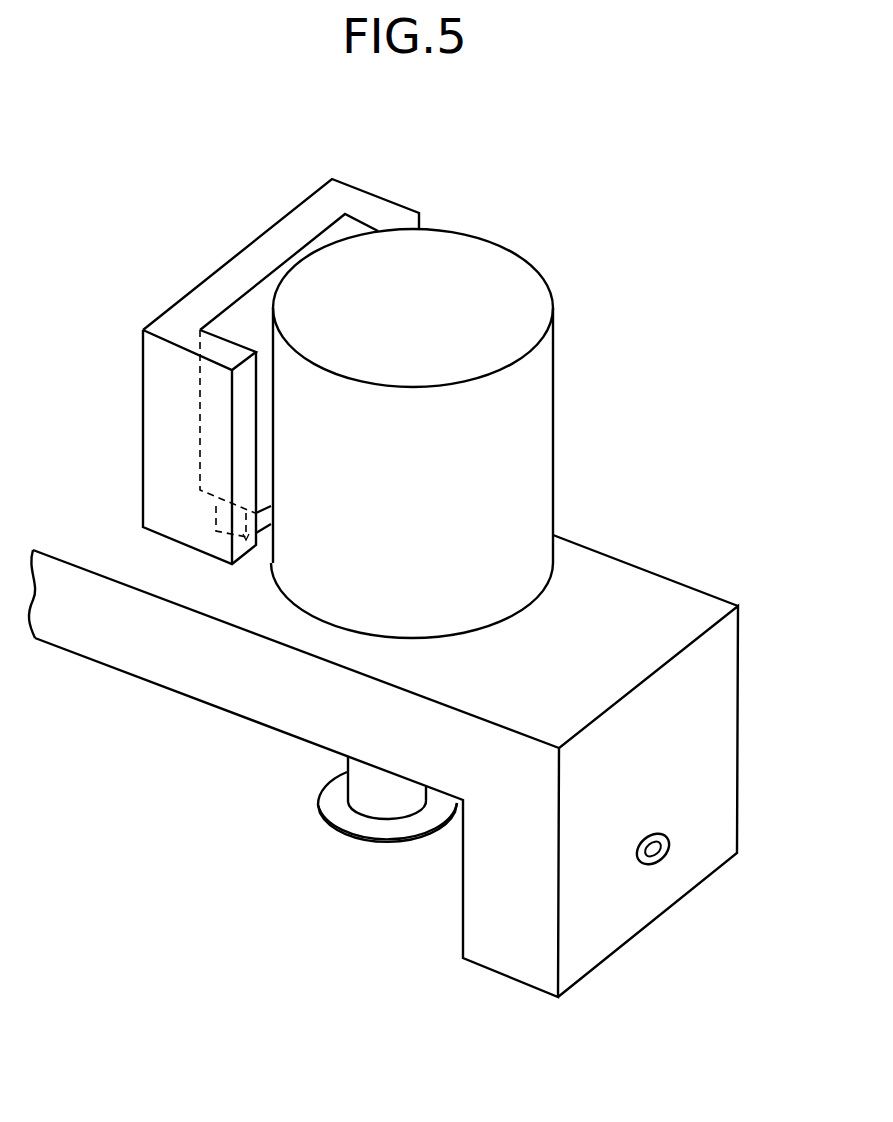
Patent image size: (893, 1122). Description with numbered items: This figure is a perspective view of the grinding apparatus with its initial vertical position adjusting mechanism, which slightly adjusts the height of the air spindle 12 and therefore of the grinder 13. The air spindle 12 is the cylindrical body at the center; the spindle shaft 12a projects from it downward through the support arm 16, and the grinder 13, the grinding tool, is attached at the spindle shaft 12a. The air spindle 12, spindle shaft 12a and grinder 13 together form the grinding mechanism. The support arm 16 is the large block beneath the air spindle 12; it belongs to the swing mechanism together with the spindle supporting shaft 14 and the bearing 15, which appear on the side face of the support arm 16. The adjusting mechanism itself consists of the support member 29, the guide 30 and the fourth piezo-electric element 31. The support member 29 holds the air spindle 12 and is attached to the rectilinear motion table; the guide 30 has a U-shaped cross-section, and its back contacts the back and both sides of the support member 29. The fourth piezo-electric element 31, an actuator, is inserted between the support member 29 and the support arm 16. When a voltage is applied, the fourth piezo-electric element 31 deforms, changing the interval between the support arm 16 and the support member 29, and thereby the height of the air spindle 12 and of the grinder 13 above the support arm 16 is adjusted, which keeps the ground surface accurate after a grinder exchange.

The air spindle 12 is at (538, 299).
The spindle shaft 12a is at (362, 778).
The grinder 13 is at (367, 830).
The spindle supporting shaft 14 is at (655, 862).
The bearing 15 is at (667, 832).
The support arm 16 is at (636, 598).
The support member 29 is at (357, 222).
The guide 30 is at (180, 327).
The fourth piezo-electric element 31 is at (213, 518).